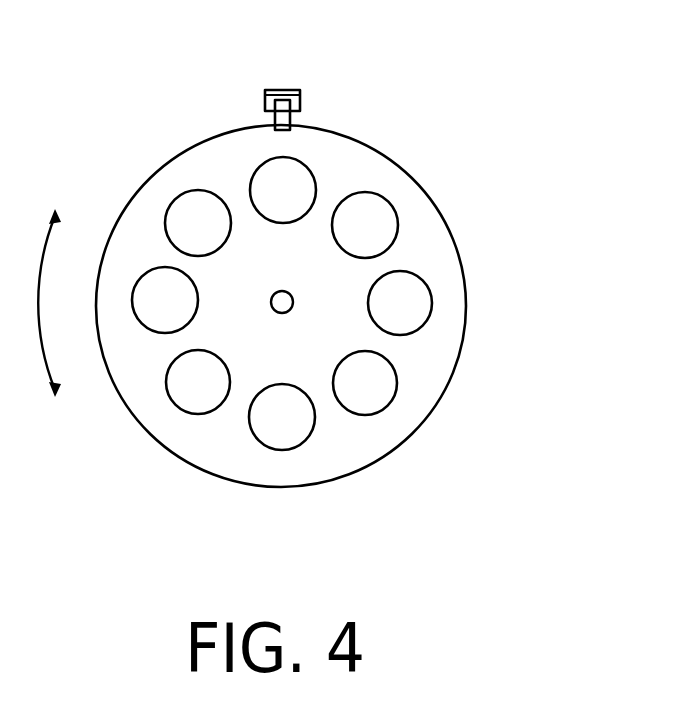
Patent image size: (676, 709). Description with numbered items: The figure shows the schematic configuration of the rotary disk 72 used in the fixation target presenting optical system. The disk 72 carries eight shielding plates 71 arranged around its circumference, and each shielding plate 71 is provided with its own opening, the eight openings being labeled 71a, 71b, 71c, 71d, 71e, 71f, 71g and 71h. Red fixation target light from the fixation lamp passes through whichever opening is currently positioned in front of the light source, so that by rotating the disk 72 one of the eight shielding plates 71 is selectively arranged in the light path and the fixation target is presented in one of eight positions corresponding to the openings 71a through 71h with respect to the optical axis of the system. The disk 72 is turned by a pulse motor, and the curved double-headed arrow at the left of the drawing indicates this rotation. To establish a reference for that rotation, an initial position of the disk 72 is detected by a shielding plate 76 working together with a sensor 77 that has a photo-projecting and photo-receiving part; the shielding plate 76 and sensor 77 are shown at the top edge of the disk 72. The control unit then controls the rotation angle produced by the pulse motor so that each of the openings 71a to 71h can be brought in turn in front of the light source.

The shielding plate 71 is at (393, 205).
The opening 71a is at (293, 415).
The opening 71b is at (192, 373).
The opening 71c is at (165, 323).
The opening 71d is at (175, 217).
The opening 71e is at (293, 172).
The opening 71f is at (382, 238).
The opening 71g is at (378, 313).
The opening 71h is at (358, 360).
The rotary disk 72 is at (187, 458).
The shielding plate 76 is at (290, 122).
The sensor 77 is at (290, 85).